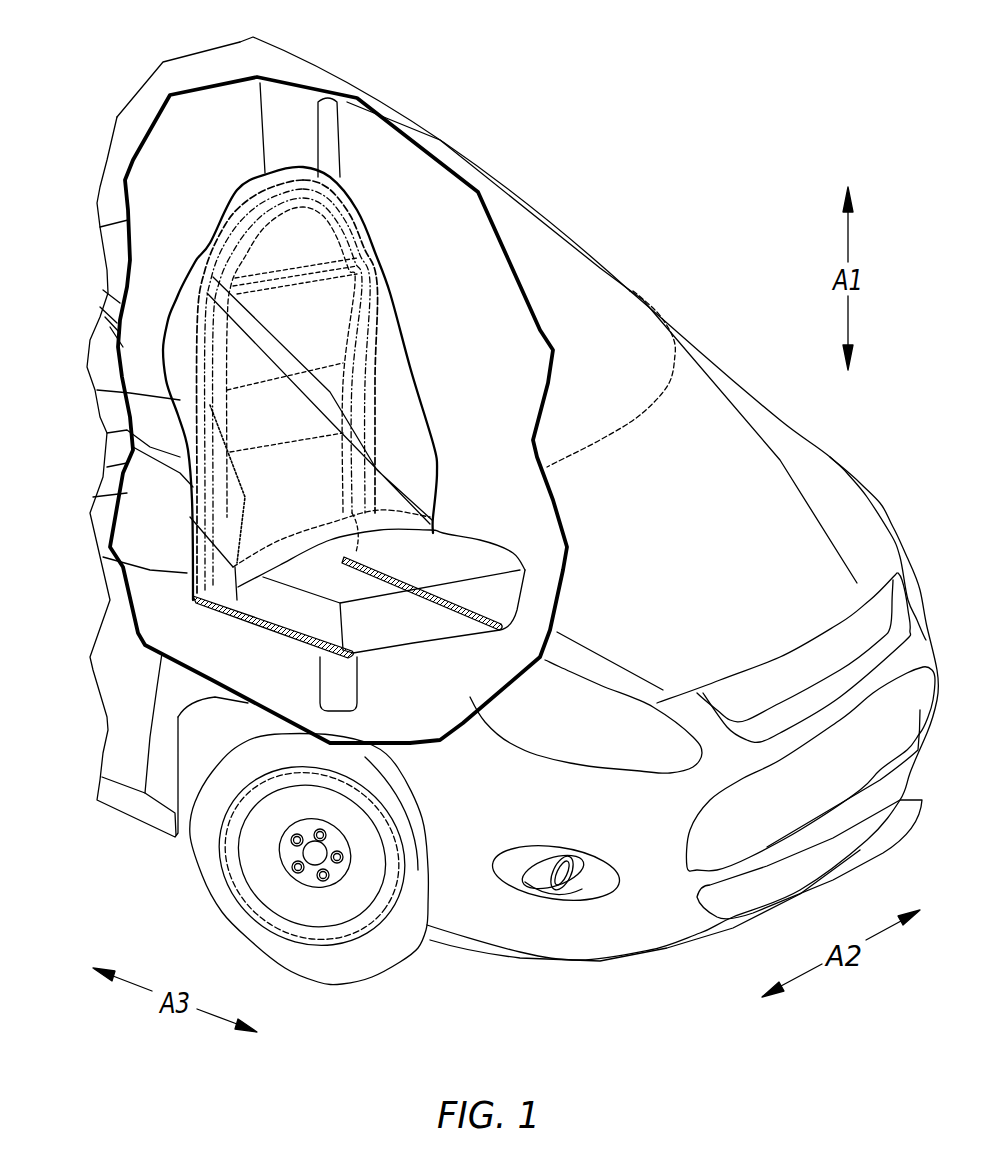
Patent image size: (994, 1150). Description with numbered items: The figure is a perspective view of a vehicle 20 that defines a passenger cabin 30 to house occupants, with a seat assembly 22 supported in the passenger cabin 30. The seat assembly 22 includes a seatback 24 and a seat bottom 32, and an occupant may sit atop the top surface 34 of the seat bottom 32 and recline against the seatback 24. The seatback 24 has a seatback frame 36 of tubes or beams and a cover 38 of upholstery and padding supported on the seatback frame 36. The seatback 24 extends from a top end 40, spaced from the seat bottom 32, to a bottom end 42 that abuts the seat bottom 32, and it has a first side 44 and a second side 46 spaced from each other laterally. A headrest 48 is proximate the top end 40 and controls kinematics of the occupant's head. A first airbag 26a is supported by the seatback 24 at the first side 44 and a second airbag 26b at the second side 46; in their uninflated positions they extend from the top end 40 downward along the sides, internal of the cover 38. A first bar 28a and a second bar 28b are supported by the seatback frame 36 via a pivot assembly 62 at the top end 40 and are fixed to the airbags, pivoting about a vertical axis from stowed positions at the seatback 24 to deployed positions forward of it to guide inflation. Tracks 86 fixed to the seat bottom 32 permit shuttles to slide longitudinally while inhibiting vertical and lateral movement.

The vehicle 20 is at (567, 147).
The seat assembly 22 is at (450, 287).
The seatback 24 is at (380, 273).
The first airbag 26a is at (200, 503).
The second airbag 26b is at (373, 363).
The first bar 28a is at (353, 177).
The second bar 28b is at (233, 183).
The passenger cabin 30 is at (200, 133).
The seat bottom 32 is at (493, 535).
The top surface 34 is at (450, 547).
The seatback frame 36 is at (367, 227).
The cover 38 is at (180, 342).
The top end 40 is at (253, 173).
The bottom end 42 is at (103, 557).
The first side 44 is at (97, 390).
The second side 46 is at (427, 420).
The headrest 48 is at (210, 240).
The pivot assembly 62 is at (288, 173).
The tracks 86 is at (280, 637).